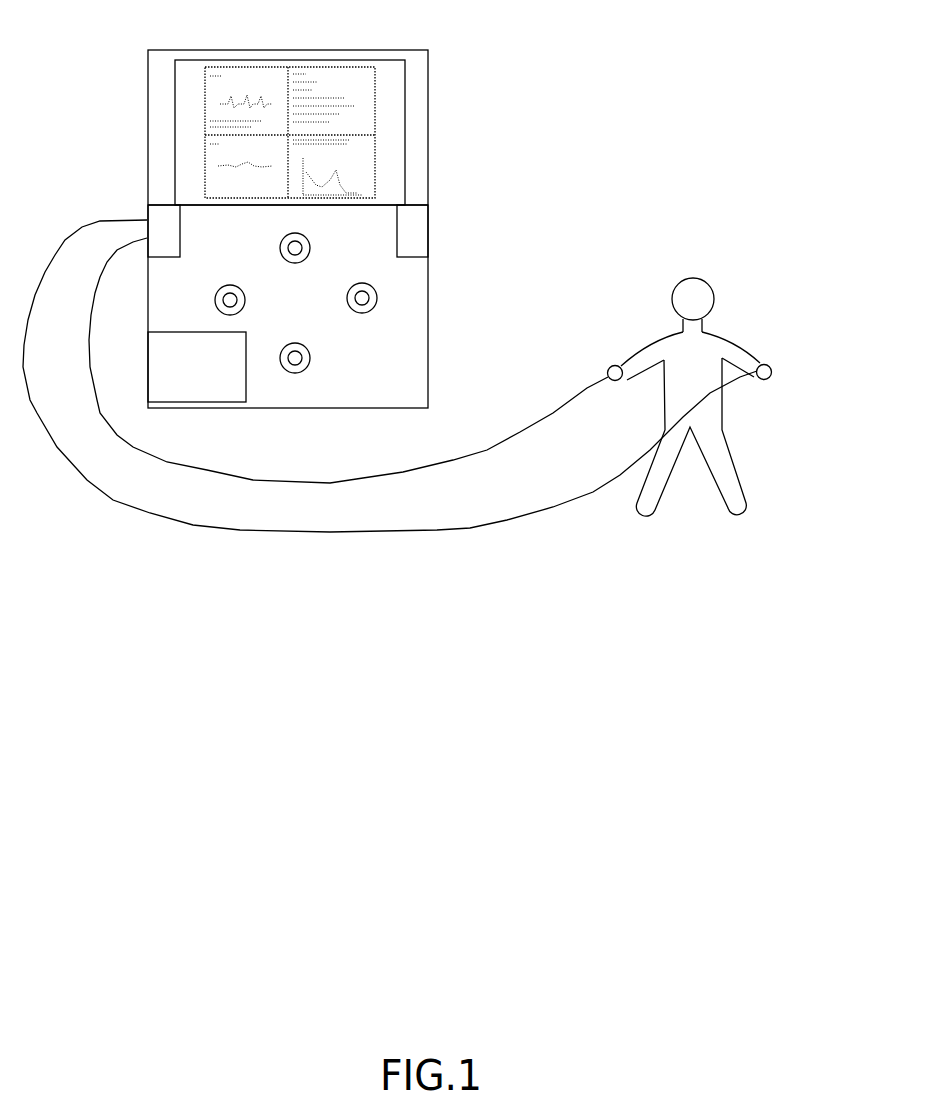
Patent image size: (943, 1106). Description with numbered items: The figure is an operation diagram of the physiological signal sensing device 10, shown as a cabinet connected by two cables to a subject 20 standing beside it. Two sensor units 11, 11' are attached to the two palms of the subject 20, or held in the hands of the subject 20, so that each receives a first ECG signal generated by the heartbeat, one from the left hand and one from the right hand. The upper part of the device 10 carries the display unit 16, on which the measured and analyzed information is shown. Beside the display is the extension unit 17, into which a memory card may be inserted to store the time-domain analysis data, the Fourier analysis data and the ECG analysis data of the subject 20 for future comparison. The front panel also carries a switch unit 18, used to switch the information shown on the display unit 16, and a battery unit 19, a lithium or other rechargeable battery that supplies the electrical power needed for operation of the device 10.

The physiological signal sensing device 10 is at (541, 135).
The display unit 16 is at (400, 135).
The extension unit 17 is at (430, 224).
The switch unit 18 is at (308, 362).
The battery unit 19 is at (197, 367).
The subject 20 is at (713, 333).
The sensor unit 11 is at (356, 360).
The sensor unit 11' is at (429, 376).